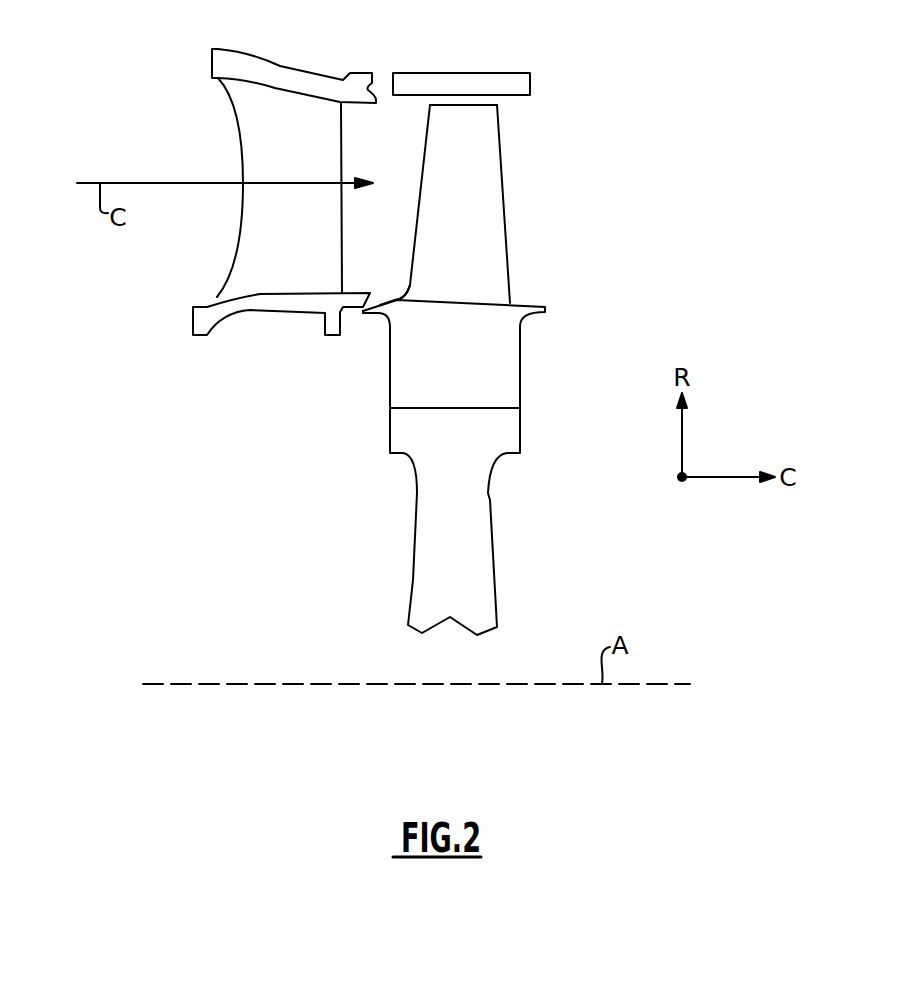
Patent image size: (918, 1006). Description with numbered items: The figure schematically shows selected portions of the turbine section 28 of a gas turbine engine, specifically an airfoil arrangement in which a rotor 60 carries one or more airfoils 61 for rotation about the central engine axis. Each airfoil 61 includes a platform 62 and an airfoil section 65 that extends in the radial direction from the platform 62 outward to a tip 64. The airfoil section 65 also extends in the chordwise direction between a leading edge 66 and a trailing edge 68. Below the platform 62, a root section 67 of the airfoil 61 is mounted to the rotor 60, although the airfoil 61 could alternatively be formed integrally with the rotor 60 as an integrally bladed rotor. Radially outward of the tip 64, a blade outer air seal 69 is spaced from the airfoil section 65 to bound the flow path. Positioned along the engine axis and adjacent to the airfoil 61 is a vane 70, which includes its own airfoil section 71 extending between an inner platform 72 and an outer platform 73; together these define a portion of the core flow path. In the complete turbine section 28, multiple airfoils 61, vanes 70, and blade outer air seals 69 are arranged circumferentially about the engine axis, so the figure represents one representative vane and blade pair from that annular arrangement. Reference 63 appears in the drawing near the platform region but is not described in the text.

The turbine section 28 is at (580, 103).
The rotor 60 is at (490, 330).
The airfoil 61 is at (490, 164).
The platform 62 is at (380, 298).
The platform 63 is at (453, 272).
The tip 64 is at (442, 103).
The airfoil section 65 is at (463, 164).
The leading edge 66 is at (422, 153).
The root section 67 is at (520, 368).
The trailing edge 68 is at (502, 152).
The blade outer air seal 69 is at (512, 73).
The vane 70 is at (250, 182).
The airfoil section 71 is at (267, 230).
The inner platform 72 is at (193, 322).
The outer platform 73 is at (212, 63).